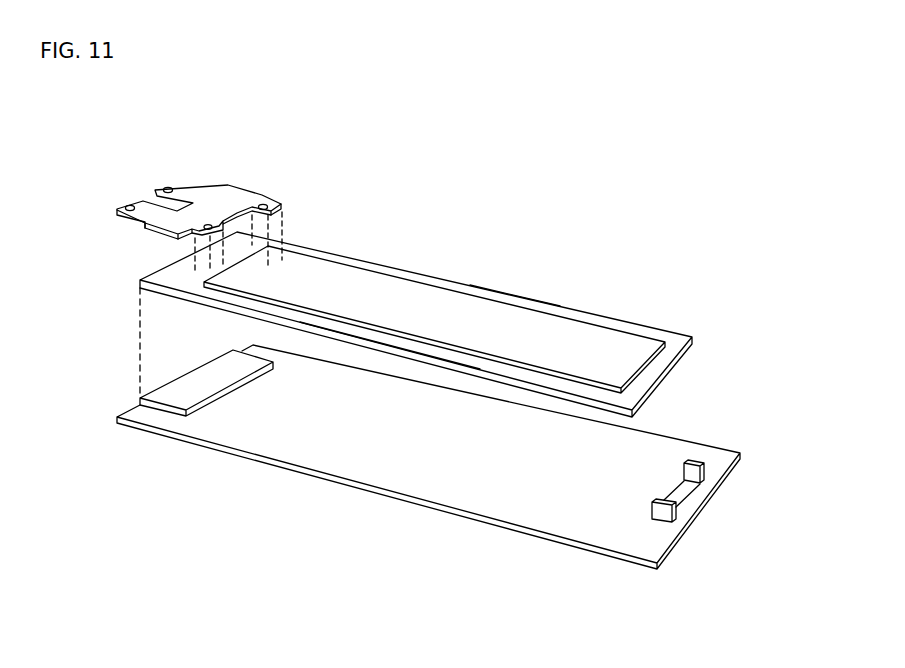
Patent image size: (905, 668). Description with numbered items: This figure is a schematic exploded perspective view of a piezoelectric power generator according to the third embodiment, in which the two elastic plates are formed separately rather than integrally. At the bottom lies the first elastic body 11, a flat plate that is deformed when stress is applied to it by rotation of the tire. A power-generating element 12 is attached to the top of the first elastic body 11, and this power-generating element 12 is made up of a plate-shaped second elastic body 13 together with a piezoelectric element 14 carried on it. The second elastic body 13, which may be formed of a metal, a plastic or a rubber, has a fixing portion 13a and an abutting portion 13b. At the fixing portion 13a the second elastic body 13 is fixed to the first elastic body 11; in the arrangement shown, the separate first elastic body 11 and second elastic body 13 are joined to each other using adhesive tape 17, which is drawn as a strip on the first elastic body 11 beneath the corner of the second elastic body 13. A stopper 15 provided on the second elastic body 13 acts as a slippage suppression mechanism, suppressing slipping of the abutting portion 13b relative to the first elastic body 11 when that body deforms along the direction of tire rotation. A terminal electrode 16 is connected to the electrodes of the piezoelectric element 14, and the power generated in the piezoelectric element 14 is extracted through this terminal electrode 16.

The first elastic body 11 is at (471, 520).
The power-generating element 12 is at (516, 254).
The second elastic body 13 is at (577, 299).
The fixing portion 13a is at (153, 280).
The abutting portion 13b is at (426, 366).
The piezoelectric element 14 is at (396, 266).
The stopper 15 is at (694, 462).
The terminal electrode 16 is at (238, 198).
The adhesive tape 17 is at (183, 398).